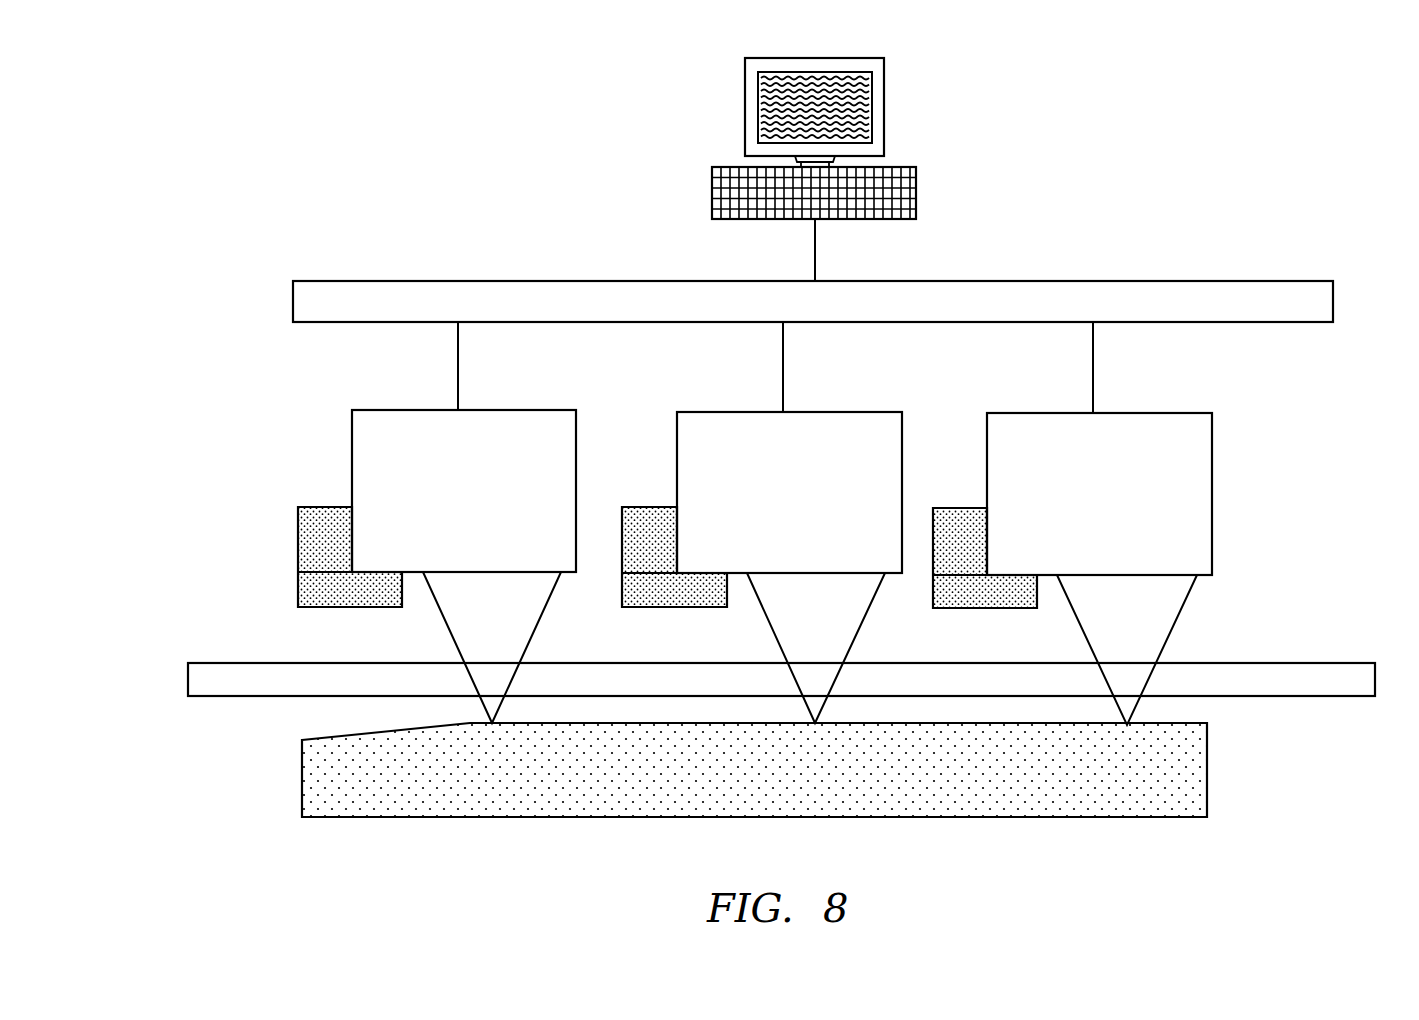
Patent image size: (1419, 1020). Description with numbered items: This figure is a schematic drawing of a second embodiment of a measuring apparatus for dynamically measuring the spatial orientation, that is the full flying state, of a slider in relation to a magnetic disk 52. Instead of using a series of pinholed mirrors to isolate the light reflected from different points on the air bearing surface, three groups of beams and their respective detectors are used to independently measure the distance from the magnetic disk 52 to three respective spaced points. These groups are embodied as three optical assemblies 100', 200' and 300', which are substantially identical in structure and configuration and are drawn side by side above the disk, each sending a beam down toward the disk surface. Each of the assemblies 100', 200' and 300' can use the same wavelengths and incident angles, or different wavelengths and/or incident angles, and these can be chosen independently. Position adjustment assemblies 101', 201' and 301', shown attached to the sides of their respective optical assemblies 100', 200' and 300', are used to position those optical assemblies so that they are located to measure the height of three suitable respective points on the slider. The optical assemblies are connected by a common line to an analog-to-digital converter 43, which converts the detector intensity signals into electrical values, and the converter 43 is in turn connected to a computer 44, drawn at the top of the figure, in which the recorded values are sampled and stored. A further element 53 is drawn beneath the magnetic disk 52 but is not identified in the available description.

The computer 44 is at (915, 168).
The analog-to-digital converter 43 is at (1262, 283).
The optical assembly 100' is at (366, 564).
The position adjustment assembly 101' is at (284, 557).
The optical assembly 200' is at (786, 534).
The position adjustment assembly 201' is at (656, 488).
The optical assembly 300' is at (1154, 569).
The position adjustment assembly 301' is at (981, 490).
The magnetic disk 52 is at (1340, 666).
The substrate 53 is at (1208, 775).